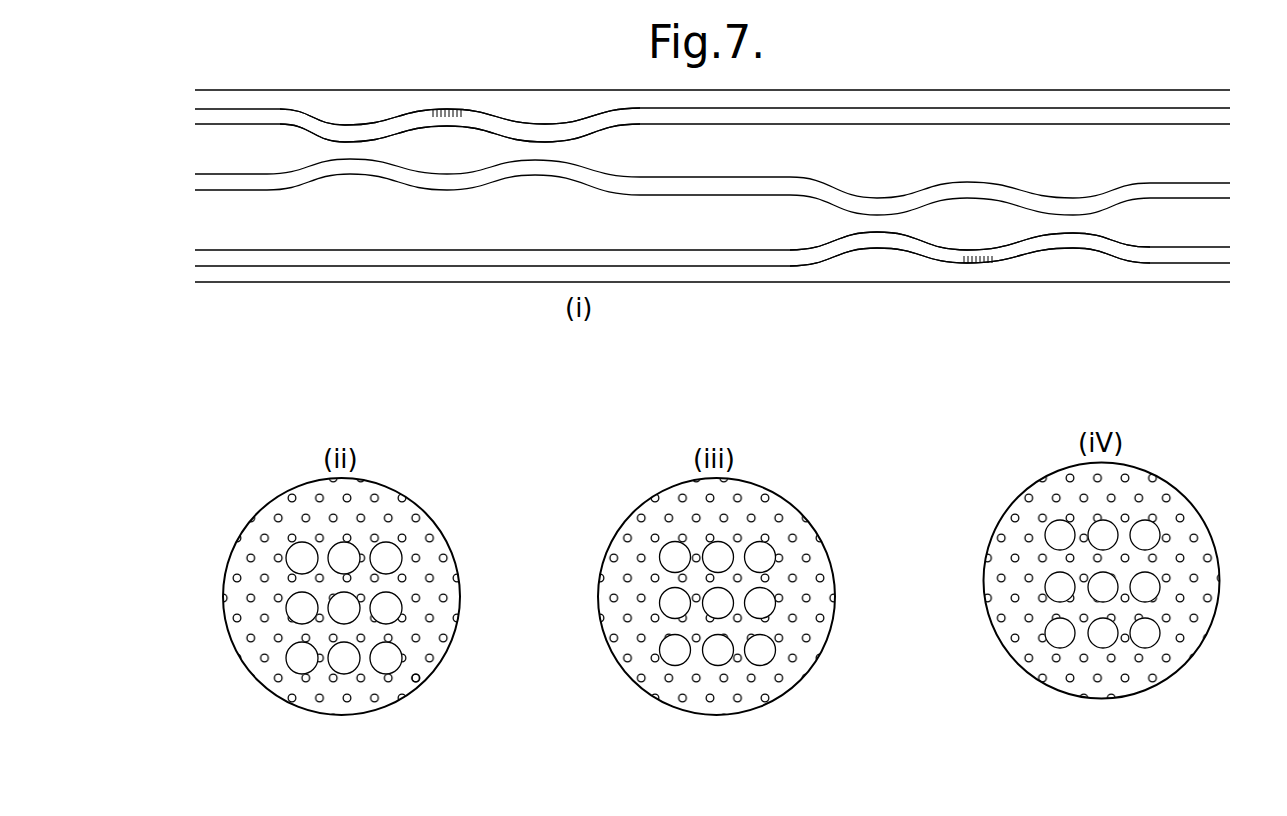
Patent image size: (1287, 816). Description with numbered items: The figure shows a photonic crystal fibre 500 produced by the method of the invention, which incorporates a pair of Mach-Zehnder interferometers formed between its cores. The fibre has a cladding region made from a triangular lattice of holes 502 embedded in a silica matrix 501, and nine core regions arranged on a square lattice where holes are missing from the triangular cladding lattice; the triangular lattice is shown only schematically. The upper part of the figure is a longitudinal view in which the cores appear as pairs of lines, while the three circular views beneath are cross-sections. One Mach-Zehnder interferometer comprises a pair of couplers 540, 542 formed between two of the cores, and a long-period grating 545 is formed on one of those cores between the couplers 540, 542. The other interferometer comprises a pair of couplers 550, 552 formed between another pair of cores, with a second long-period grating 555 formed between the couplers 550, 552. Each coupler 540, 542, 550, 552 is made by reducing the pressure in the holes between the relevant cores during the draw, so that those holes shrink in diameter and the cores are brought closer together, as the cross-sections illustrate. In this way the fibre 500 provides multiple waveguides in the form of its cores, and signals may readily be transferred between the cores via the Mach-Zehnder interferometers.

The photonic crystal fibre 500 is at (258, 86).
The silica matrix 501 is at (267, 518).
The holes 502 is at (402, 673).
The coupler 540 is at (352, 127).
The coupler 542 is at (543, 125).
The long-period grating 545 is at (447, 111).
The coupler 550 is at (882, 251).
The coupler 552 is at (1073, 250).
The long-period grating 555 is at (977, 264).